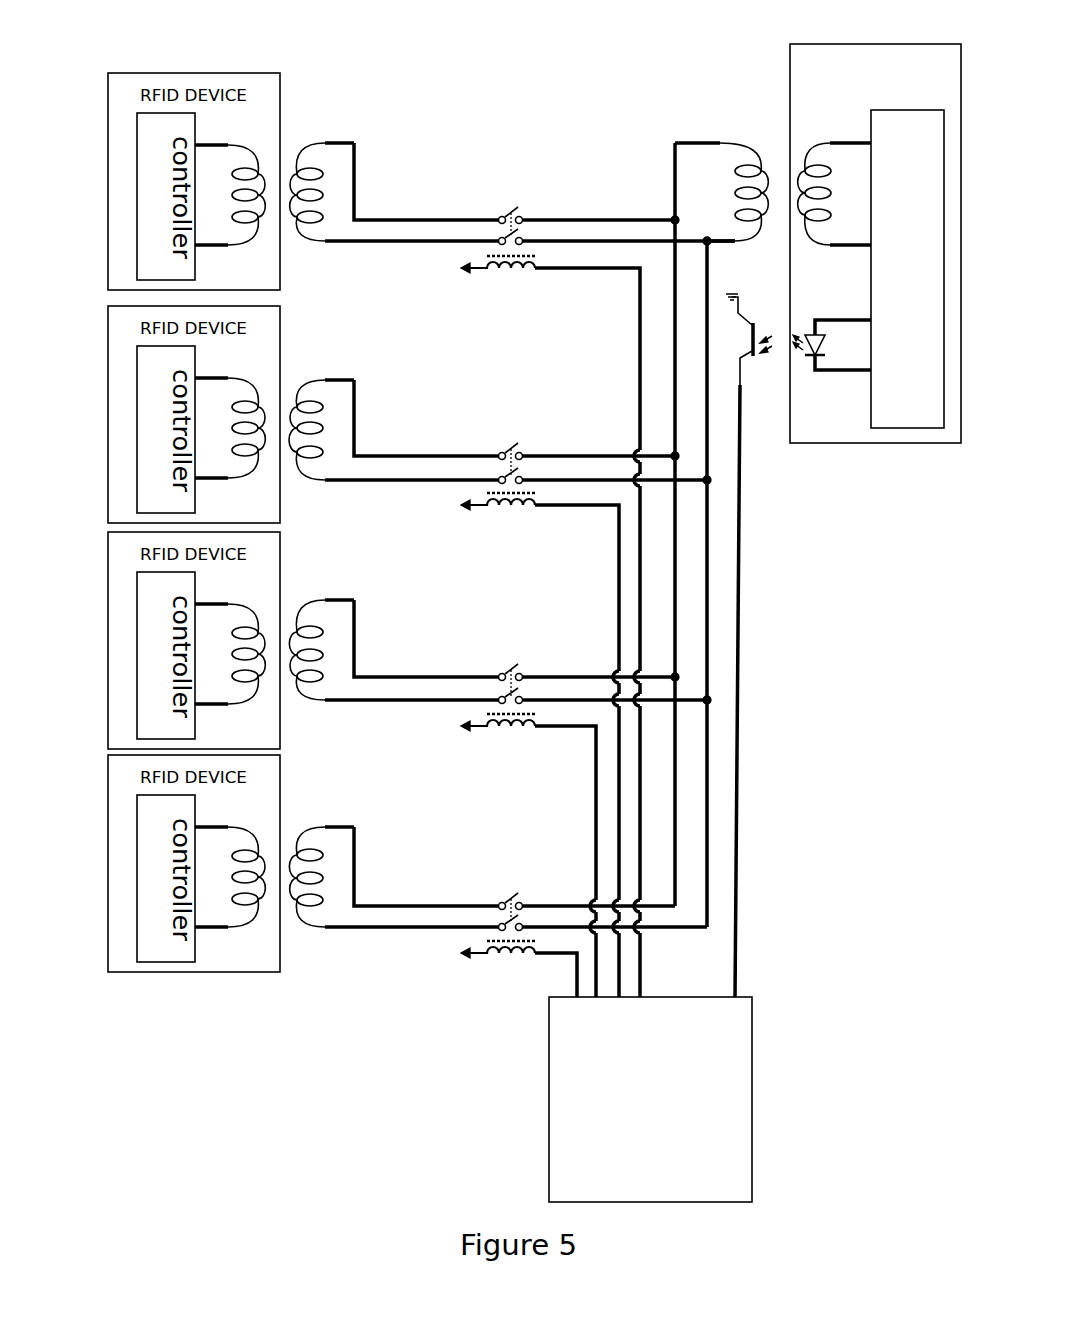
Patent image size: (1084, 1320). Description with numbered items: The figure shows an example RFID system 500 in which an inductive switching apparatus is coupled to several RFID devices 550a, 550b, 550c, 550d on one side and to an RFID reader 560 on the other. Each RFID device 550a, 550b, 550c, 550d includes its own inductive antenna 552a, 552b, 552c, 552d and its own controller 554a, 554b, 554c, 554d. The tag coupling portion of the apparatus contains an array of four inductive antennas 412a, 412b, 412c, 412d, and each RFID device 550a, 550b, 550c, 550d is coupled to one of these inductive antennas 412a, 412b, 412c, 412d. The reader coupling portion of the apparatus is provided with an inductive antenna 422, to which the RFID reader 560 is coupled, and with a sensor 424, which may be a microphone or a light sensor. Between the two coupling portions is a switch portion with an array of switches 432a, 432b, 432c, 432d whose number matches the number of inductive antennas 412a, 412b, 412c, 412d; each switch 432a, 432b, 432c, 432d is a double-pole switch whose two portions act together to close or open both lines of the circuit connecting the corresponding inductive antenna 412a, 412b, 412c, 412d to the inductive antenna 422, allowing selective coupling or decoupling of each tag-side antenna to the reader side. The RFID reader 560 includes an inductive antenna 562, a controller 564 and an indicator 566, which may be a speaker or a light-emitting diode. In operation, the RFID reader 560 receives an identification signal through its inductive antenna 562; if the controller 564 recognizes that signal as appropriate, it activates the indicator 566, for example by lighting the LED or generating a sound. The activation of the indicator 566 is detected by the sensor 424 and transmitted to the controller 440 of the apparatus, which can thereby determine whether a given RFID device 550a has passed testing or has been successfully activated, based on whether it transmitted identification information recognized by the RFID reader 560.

The RFID system 500 is at (786, 679).
The RFID device 550a is at (193, 181).
The RFID device 550b is at (193, 410).
The RFID device 550c is at (193, 637).
The RFID device 550d is at (193, 860).
The inductive antenna 552a is at (255, 177).
The inductive antenna 552b is at (255, 407).
The inductive antenna 552c is at (255, 632).
The inductive antenna 552d is at (255, 855).
The controller 554a is at (135, 175).
The controller 554b is at (135, 400).
The controller 554c is at (135, 626).
The controller 554d is at (135, 850).
The inductive antenna 412a is at (300, 217).
The inductive antenna 412b is at (310, 452).
The inductive antenna 412c is at (310, 676).
The inductive antenna 412d is at (310, 900).
The switch 432a is at (538, 203).
The switch 432b is at (501, 431).
The switch 432c is at (505, 653).
The switch 432d is at (508, 878).
The inductive antenna 422 is at (757, 170).
The sensor 424 is at (757, 355).
The controller 440 is at (720, 1023).
The RFID reader 560 is at (945, 68).
The inductive antenna 562 is at (810, 167).
The controller 564 is at (907, 269).
The indicator 566 is at (823, 372).